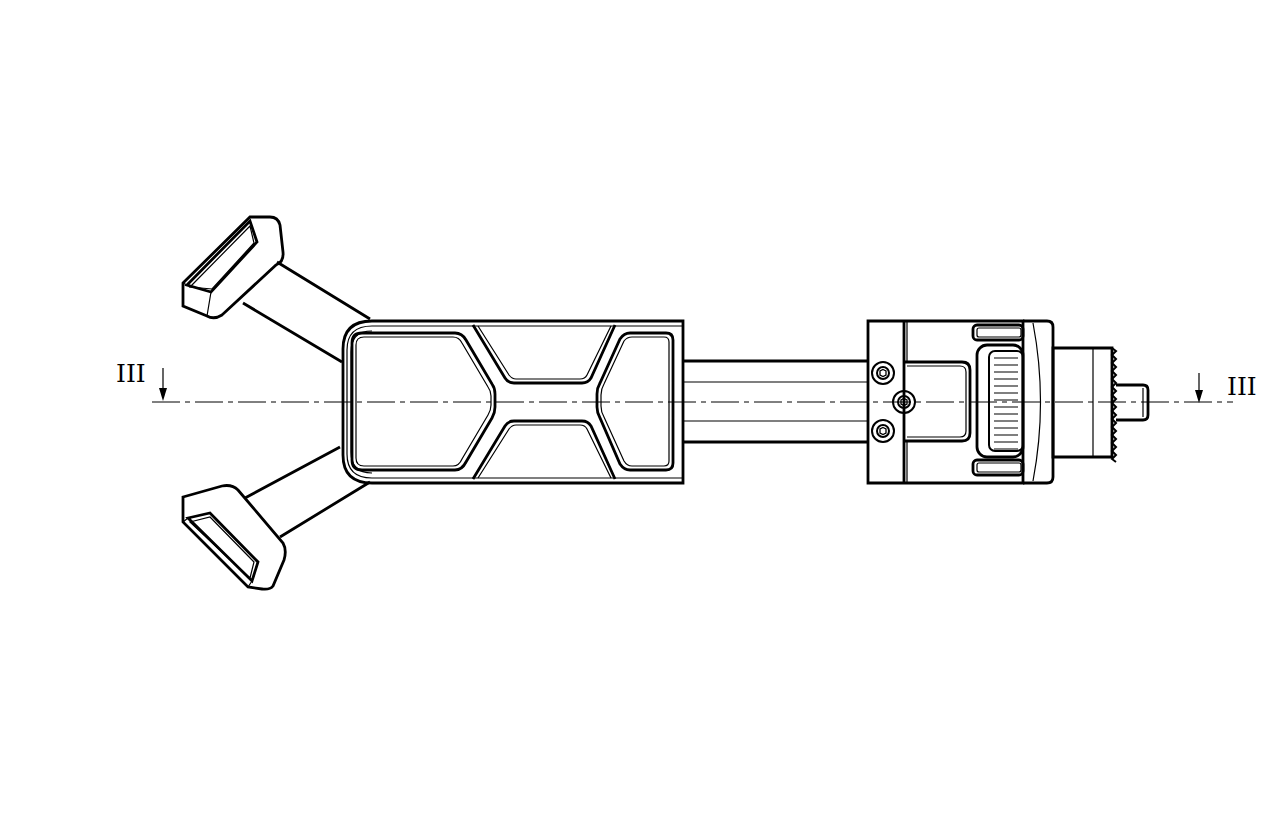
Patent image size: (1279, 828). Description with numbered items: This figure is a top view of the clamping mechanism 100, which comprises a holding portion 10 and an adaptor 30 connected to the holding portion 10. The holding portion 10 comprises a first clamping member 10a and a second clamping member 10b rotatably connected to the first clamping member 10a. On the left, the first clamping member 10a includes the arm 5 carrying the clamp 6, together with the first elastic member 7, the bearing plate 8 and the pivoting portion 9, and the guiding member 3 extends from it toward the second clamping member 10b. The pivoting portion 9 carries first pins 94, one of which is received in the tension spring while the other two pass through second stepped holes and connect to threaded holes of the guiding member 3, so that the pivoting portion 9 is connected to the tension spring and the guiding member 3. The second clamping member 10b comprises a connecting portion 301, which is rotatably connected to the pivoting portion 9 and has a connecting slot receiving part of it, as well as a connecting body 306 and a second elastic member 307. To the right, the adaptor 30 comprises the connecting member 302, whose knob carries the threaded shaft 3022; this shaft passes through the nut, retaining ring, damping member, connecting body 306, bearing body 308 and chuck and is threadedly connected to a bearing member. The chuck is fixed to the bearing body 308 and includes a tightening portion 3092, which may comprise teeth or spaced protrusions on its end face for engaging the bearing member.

The clamping mechanism 100 is at (626, 88).
The holding portion 10 is at (1027, 180).
The first clamping member 10a is at (697, 318).
The second clamping member 10b is at (1088, 240).
The guiding member 3 is at (746, 372).
The arm 5 is at (318, 495).
The clamp 6 is at (265, 575).
The first elastic member 7 is at (415, 340).
The bearing plate 8 is at (565, 392).
The pivoting portion 9 is at (885, 333).
The first pin 94 is at (882, 441).
The adaptor 30 is at (1113, 352).
The connecting portion 301 is at (928, 340).
The connecting member 302 is at (1009, 458).
The connecting body 306 is at (1040, 338).
The second elastic member 307 is at (1000, 335).
The bearing body 308 is at (1082, 358).
The threaded shaft 3022 is at (1128, 386).
The tightening portion 3092 is at (1118, 440).